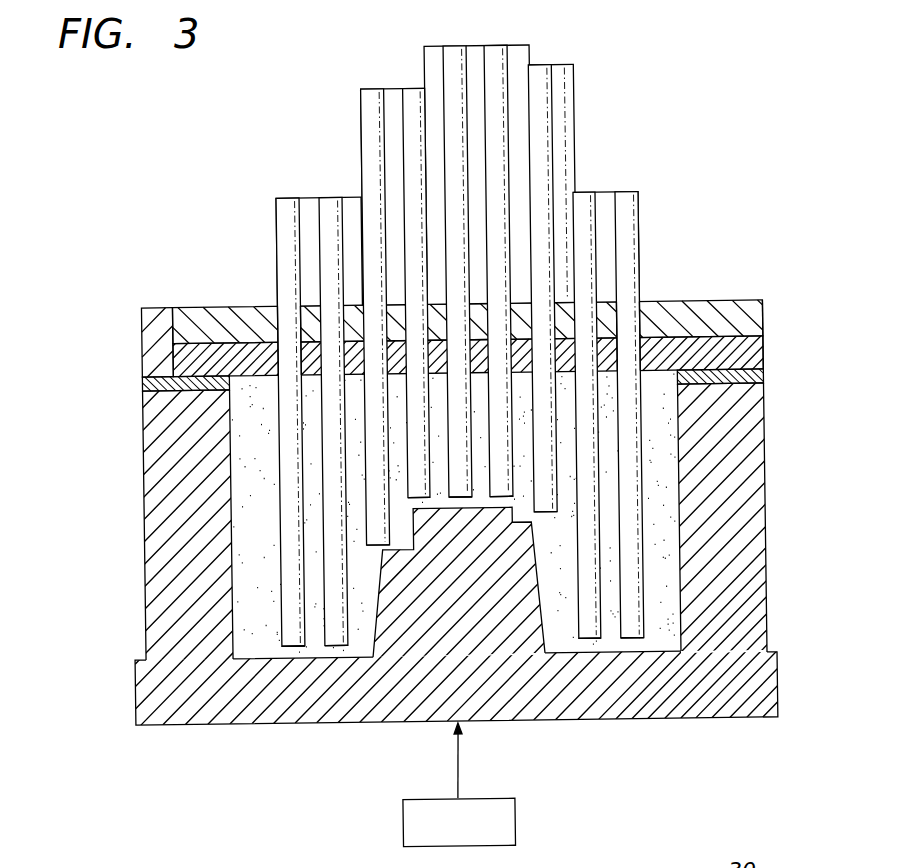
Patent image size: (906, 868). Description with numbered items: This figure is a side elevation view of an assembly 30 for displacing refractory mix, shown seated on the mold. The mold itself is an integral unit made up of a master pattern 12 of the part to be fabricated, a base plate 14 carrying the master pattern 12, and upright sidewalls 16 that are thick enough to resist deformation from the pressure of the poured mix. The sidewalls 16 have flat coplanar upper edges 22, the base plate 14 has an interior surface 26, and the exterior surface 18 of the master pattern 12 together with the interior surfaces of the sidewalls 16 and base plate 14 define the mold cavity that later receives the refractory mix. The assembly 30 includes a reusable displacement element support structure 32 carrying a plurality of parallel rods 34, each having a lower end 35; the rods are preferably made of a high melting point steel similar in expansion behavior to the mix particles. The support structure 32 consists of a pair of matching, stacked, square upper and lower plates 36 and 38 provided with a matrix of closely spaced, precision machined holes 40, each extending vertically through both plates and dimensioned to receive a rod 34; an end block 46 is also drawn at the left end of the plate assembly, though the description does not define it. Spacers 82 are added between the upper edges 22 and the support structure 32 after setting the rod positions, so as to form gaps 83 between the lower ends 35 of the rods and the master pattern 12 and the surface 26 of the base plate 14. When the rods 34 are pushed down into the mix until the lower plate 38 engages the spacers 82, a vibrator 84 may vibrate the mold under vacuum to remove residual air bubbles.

The master pattern 12 is at (460, 599).
The base plate 14 is at (750, 701).
The sidewalls 16 is at (165, 508).
The exterior surface of the master pattern 18 is at (470, 510).
The upper edges 22 is at (767, 351).
The interior surface 26 is at (267, 655).
The assembly 30 is at (457, 414).
The displacement element support structure 32 is at (429, 329).
The rods 34 is at (459, 53).
The lower end 35 is at (288, 648).
The upper plate 36 is at (700, 308).
The lower plate 38 is at (767, 313).
The holes 40 is at (289, 320).
The end block 46 is at (166, 304).
The spacers 82 is at (142, 380).
The gaps 83 is at (298, 648).
The vibrator 84 is at (513, 833).